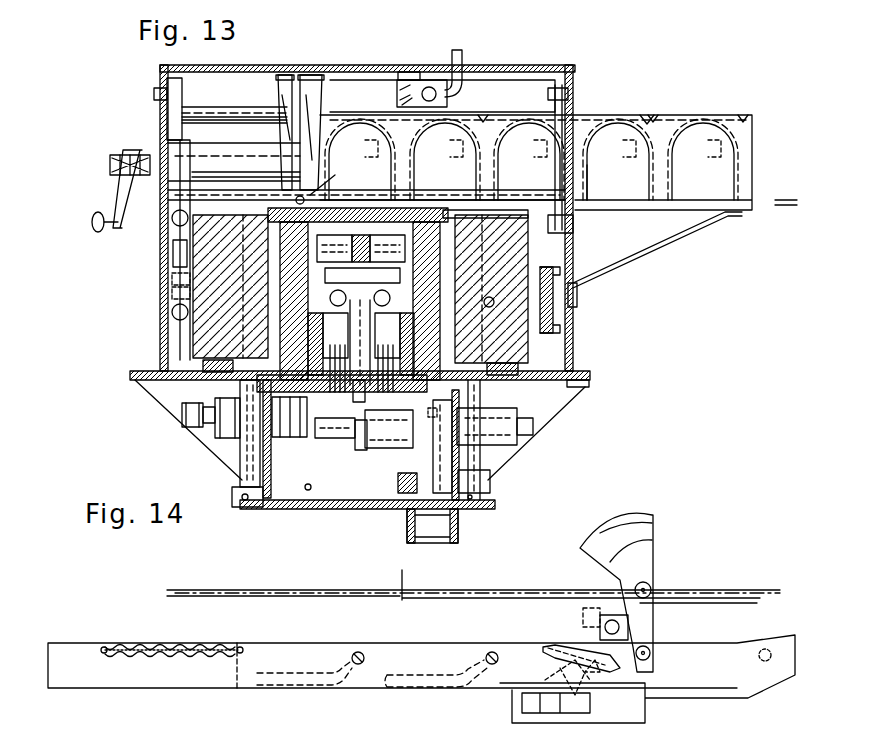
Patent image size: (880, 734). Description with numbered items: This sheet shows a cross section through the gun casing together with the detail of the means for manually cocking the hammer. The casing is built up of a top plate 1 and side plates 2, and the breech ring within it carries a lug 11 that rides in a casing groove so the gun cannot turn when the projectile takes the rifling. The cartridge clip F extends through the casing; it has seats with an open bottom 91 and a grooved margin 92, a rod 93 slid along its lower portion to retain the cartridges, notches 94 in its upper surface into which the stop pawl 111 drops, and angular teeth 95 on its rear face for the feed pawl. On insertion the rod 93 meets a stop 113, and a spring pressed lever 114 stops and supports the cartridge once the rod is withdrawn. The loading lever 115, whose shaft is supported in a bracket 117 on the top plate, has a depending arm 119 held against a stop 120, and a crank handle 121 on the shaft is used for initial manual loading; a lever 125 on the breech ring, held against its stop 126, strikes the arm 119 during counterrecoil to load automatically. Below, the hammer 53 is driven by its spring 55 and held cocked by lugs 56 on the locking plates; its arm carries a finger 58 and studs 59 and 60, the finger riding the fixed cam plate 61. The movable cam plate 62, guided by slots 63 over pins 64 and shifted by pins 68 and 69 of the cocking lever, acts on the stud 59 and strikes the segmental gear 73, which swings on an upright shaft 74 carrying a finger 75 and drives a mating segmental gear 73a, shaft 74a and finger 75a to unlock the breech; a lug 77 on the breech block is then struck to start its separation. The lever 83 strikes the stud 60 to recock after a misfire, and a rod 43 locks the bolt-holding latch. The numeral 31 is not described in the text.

In FIG. 13, the top plate 1 is at (363, 70).
In FIG. 13, the side plates 2 is at (160, 235).
In FIG. 13, the lug 11 is at (553, 298).
In FIG. 13, the spacer block 31 is at (203, 365).
In FIG. 13, the rod 43 is at (310, 490).
In FIG. 14, the hammer 53 is at (647, 566).
In FIG. 13, the driving spring 55 is at (352, 392).
In FIG. 13, the lugs 56 is at (343, 295).
In FIG. 13, the finger 58 is at (375, 443).
In FIG. 13, the stud 59 is at (418, 428).
In FIG. 14, the stud 59 is at (652, 653).
In FIG. 13, the stud 60 is at (335, 438).
In FIG. 13, the fixed cam plate 61 is at (397, 487).
In FIG. 14, the fixed cam plate 61 is at (421, 679).
In FIG. 13, the movable cam plate 62 is at (425, 488).
In FIG. 14, the slots 63 is at (327, 679).
In FIG. 13, the pins 64 is at (410, 460).
In FIG. 14, the pins 64 is at (362, 653).
In FIG. 13, the pin 68 is at (460, 413).
In FIG. 14, the pin 69 is at (550, 650).
In FIG. 13, the segmental gear 73 is at (377, 503).
In FIG. 13, the mating segmental gear 73a is at (298, 499).
In FIG. 13, the upright shaft 74 is at (480, 394).
In FIG. 13, the shaft 74a is at (245, 453).
In FIG. 13, the finger 75 is at (475, 362).
In FIG. 13, the finger 75a is at (200, 343).
In FIG. 13, the lug 77 is at (428, 413).
In FIG. 14, the lug 77 is at (583, 610).
In FIG. 13, the lever 83 is at (330, 217).
In FIG. 13, the open bottom 91 is at (595, 208).
In FIG. 13, the grooved margin 92 is at (590, 192).
In FIG. 13, the rod 93 is at (793, 206).
In FIG. 13, the notches 94 is at (648, 118).
In FIG. 13, the angular teeth 95 is at (531, 159).
In FIG. 13, the stop pawl 111 is at (458, 87).
In FIG. 13, the stop 113 is at (397, 200).
In FIG. 13, the spring pressed lever 114 is at (335, 176).
In FIG. 13, the loading lever 115 is at (325, 92).
In FIG. 13, the bracket 117 is at (282, 88).
In FIG. 13, the depending arm 119 is at (182, 196).
In FIG. 13, the stop 120 is at (172, 259).
In FIG. 13, the crank handle 121 is at (113, 190).
In FIG. 13, the lever 125 is at (180, 279).
In FIG. 13, the stop 126 is at (187, 300).
In FIG. 13, the clip F is at (668, 135).